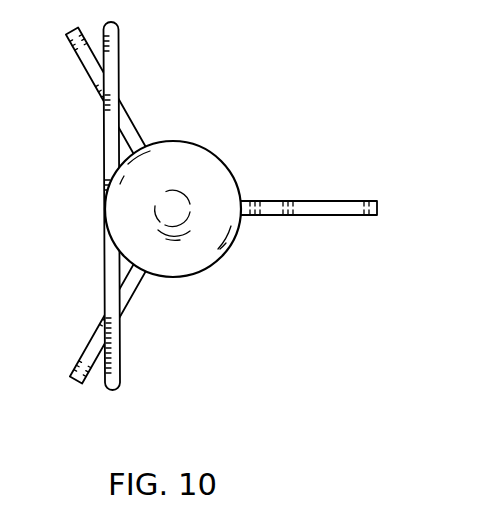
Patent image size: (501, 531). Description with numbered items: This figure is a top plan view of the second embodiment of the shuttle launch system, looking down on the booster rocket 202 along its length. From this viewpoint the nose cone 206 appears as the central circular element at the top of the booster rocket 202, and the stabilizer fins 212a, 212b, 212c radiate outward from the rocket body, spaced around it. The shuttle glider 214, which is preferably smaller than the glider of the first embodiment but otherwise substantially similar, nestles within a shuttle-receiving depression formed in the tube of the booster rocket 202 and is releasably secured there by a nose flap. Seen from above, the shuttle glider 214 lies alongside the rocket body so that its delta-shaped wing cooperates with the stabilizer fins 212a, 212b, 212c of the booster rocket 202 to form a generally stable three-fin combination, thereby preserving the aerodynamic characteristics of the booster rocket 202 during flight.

The booster rocket 202 is at (222, 157).
The nose cone 206 is at (193, 253).
The stabilizer fin 212a is at (322, 210).
The stabilizer fin 212b is at (76, 57).
The stabilizer fin 212c is at (97, 373).
The shuttle glider 214 is at (103, 237).